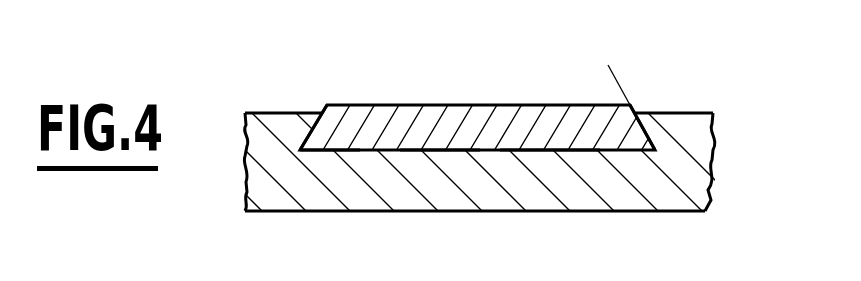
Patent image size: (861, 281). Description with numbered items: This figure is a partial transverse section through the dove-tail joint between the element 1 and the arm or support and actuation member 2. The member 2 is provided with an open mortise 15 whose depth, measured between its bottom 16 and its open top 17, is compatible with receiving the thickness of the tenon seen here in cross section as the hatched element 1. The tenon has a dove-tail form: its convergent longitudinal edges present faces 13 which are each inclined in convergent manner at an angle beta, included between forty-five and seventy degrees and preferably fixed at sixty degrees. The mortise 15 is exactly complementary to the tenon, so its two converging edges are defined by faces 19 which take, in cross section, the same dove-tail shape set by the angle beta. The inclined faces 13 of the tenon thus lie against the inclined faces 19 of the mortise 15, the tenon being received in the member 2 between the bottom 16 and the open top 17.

The semiconductor chip 1 is at (453, 98).
The arm or support and actuation member 2 is at (712, 148).
The faces 13 is at (317, 132).
The open mortise 15 is at (542, 158).
The bottom 16 is at (442, 152).
The open top 17 is at (302, 112).
The faces 19 is at (657, 135).